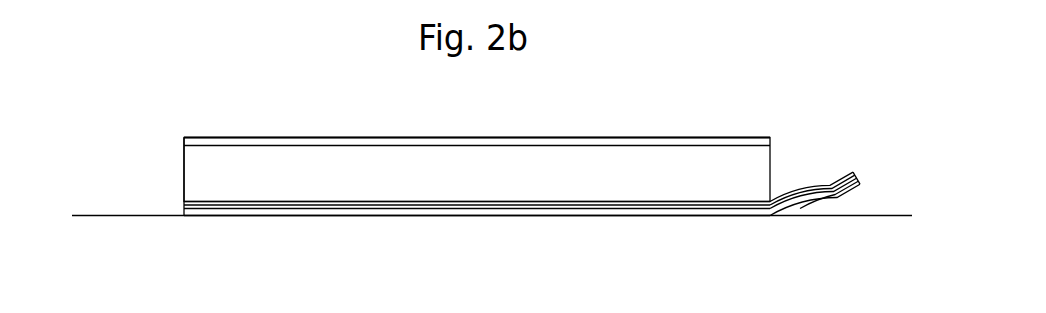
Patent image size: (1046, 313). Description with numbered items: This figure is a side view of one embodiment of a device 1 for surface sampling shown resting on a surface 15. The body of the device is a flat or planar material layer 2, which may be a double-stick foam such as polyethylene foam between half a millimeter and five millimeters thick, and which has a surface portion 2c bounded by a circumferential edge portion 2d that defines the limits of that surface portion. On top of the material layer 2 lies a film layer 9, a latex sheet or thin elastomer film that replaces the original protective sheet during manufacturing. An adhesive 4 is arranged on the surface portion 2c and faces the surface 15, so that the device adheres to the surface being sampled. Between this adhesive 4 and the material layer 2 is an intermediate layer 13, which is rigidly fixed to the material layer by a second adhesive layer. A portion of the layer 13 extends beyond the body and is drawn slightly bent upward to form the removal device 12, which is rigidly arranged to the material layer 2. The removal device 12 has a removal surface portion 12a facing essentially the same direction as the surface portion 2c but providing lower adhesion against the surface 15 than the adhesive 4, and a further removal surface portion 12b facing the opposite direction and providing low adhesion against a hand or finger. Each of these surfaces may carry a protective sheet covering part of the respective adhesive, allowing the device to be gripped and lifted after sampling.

The device for surface sampling 1 is at (170, 108).
The flat material layer 2 is at (213, 157).
The surface portion 2c is at (503, 216).
The circumferential edge portion 2d is at (184, 212).
The adhesive 4 is at (358, 216).
The film layer 9 is at (288, 137).
The intermediate layer 13 is at (295, 208).
The surface 15 is at (130, 214).
The removal device 12 is at (857, 181).
The removal surface portion 12a is at (834, 203).
The further removal surface portion 12b is at (830, 184).